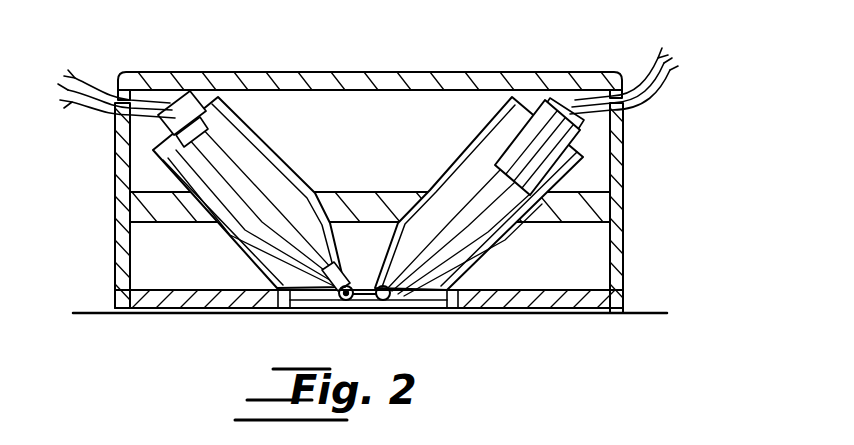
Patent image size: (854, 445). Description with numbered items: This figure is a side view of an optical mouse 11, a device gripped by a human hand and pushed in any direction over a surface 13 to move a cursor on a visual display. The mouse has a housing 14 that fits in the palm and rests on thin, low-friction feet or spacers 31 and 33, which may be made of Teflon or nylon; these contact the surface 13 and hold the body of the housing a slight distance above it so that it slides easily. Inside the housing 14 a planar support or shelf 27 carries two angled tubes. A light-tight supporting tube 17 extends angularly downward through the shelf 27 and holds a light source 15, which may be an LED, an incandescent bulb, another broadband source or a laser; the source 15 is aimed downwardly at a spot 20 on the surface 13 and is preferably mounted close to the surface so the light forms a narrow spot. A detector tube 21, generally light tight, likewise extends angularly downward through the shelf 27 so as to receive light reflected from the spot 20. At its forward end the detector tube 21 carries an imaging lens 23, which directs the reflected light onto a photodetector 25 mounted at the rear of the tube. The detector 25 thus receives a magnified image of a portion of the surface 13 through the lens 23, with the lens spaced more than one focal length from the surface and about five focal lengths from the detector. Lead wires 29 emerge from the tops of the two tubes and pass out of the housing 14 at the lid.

The optical mouse 11 is at (512, 38).
The surface 13 is at (658, 314).
The housing 14 is at (625, 128).
The light source 15 is at (344, 302).
The supporting tube 17 is at (273, 153).
The spot 20 is at (376, 304).
The detector tube 21 is at (437, 182).
The imaging lens 23 is at (388, 304).
The photodetector 25 is at (497, 128).
The planar support 27 is at (594, 190).
The lead wires 29 is at (672, 73).
The spacer 31 is at (615, 305).
The spacer 33 is at (116, 300).